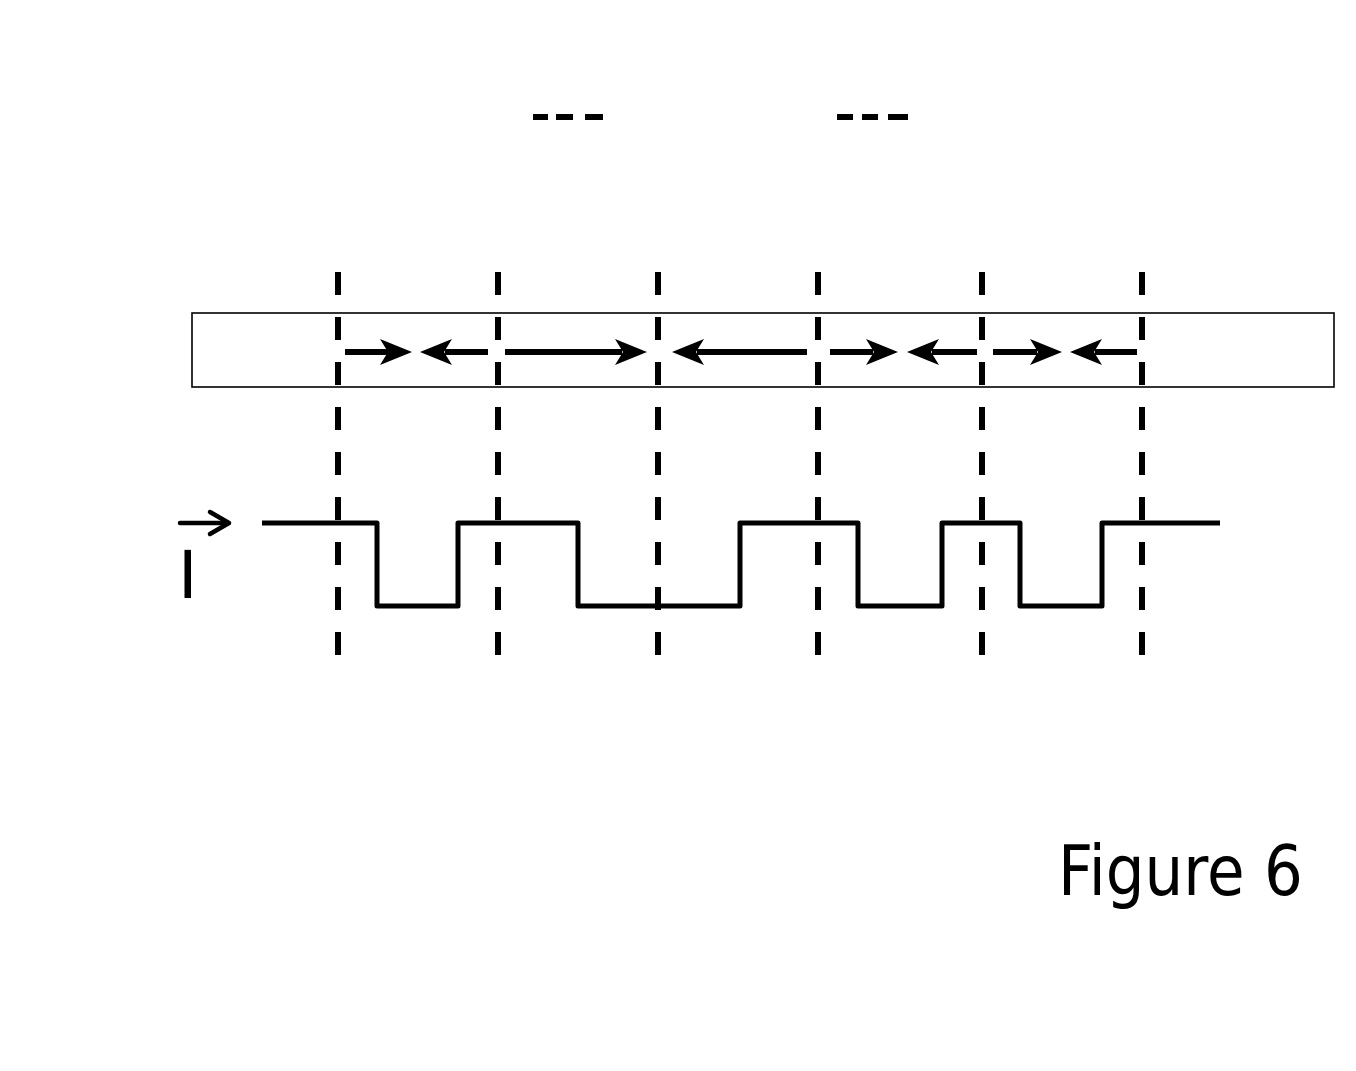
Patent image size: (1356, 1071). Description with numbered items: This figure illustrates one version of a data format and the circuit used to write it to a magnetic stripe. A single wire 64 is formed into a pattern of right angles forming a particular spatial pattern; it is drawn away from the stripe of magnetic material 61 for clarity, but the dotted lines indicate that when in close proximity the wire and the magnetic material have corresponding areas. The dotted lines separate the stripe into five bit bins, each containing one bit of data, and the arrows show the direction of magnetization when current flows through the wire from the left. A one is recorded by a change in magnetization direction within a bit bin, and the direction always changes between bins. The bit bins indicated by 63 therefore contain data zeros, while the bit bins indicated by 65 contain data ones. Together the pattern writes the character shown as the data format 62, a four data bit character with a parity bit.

The stripe of magnetic material 61 is at (305, 353).
The data format 62 is at (828, 78).
The bit bins containing data zeros 63 is at (730, 325).
The single wire 64 is at (425, 610).
The bit bins containing data ones 65 is at (895, 323).